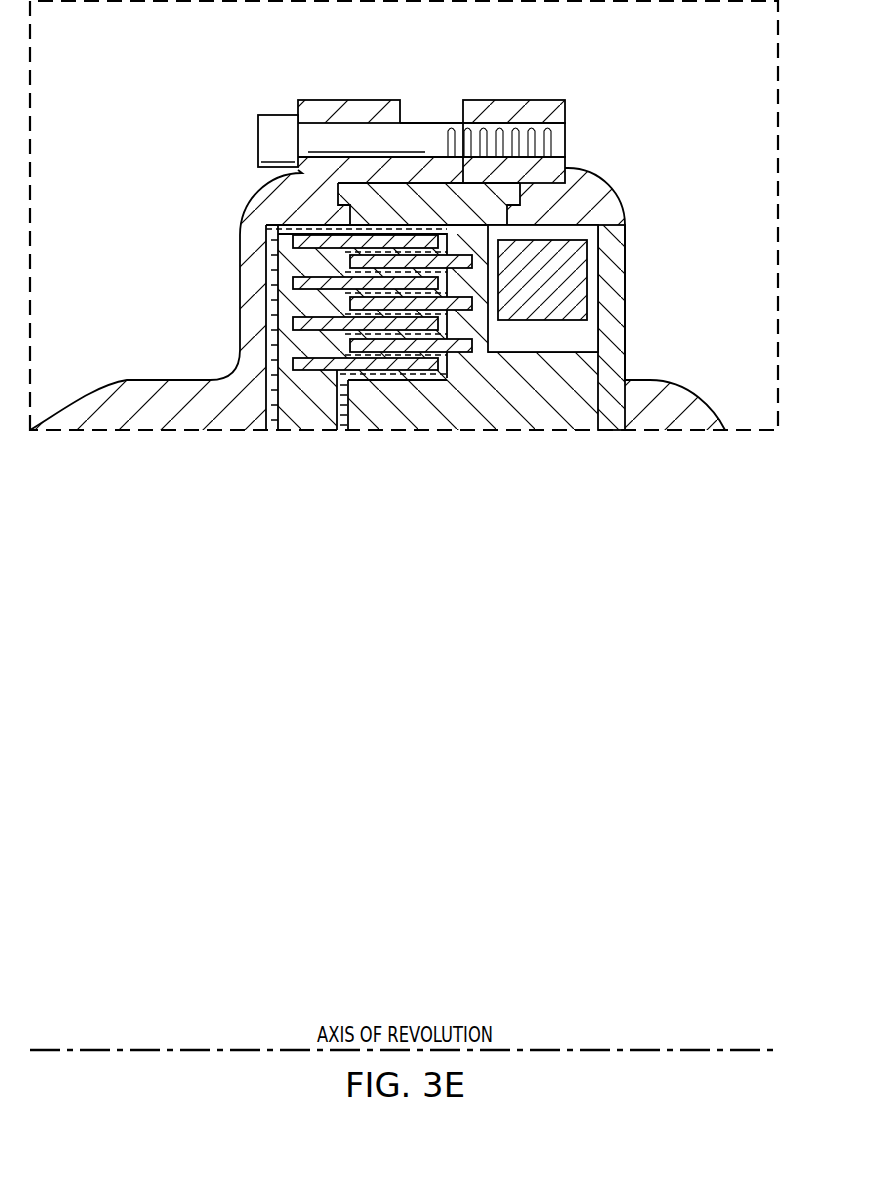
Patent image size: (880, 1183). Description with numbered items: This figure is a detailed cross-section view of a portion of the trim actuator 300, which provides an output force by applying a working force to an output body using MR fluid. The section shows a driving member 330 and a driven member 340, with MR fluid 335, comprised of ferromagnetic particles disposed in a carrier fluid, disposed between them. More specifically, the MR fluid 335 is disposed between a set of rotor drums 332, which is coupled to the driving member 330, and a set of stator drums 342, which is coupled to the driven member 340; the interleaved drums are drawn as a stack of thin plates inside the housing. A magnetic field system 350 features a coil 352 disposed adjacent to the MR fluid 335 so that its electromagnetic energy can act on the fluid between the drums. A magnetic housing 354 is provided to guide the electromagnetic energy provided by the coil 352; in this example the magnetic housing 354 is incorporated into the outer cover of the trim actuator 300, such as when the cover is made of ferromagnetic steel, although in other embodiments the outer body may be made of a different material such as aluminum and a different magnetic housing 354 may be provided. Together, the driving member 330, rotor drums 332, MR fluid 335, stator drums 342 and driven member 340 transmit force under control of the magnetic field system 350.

The trim actuator 300 is at (524, 73).
The driving member 330 is at (315, 400).
The rotor drums 332 is at (315, 228).
The MR fluid 335 is at (270, 297).
The driven member 340 is at (145, 385).
The stator drums 342 is at (433, 190).
The magnetic field system 350 is at (339, 73).
The coil 352 is at (580, 287).
The magnetic housing 354 is at (588, 190).